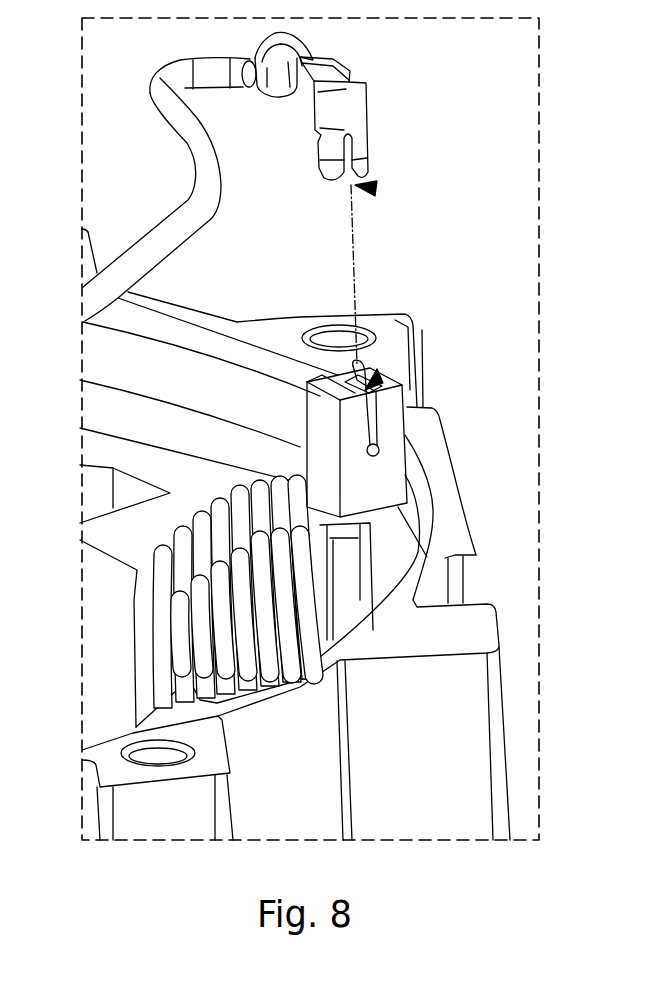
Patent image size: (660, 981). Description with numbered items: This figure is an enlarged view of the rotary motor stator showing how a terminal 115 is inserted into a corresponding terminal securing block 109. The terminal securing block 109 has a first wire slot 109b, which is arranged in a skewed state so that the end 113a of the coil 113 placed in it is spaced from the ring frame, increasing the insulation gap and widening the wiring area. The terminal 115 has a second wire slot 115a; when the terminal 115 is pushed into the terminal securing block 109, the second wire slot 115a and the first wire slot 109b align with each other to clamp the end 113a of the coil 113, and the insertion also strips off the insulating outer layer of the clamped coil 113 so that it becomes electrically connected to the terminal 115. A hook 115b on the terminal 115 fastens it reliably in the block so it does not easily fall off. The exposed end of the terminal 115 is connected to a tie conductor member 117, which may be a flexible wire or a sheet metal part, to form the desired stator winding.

The terminal securing block 109 is at (377, 484).
The first wire slot 109b is at (380, 377).
The coil 113 is at (190, 548).
The end of the coil 113a is at (379, 452).
The terminal 115 is at (363, 115).
The second wire slot 115a is at (378, 192).
The hook 115b is at (370, 137).
The tie conductor member 117 is at (195, 200).